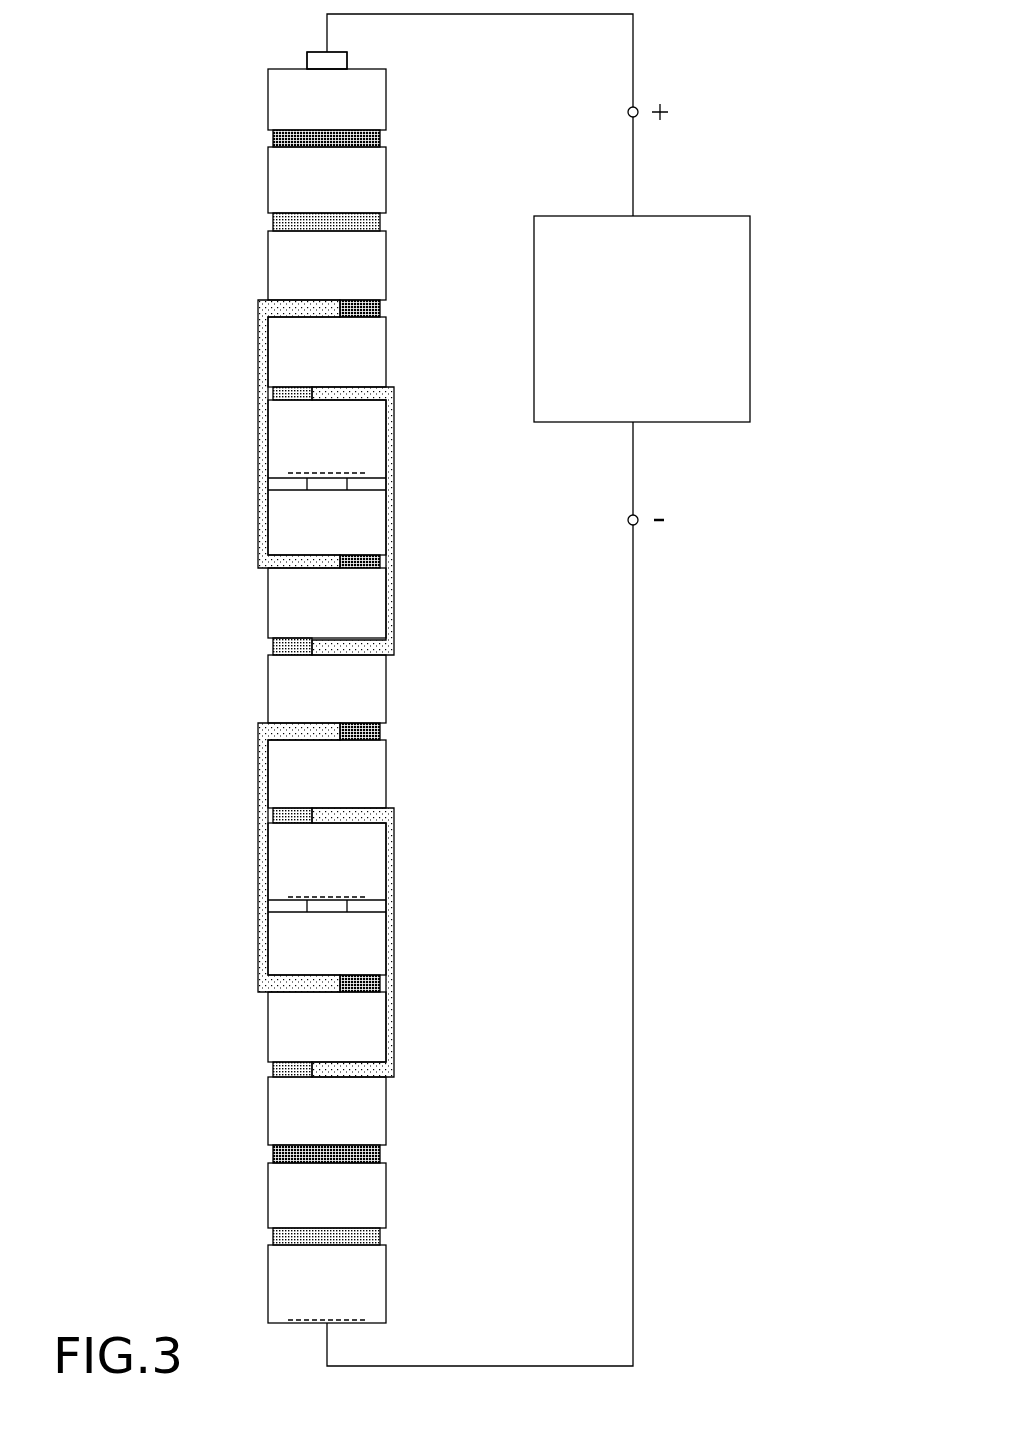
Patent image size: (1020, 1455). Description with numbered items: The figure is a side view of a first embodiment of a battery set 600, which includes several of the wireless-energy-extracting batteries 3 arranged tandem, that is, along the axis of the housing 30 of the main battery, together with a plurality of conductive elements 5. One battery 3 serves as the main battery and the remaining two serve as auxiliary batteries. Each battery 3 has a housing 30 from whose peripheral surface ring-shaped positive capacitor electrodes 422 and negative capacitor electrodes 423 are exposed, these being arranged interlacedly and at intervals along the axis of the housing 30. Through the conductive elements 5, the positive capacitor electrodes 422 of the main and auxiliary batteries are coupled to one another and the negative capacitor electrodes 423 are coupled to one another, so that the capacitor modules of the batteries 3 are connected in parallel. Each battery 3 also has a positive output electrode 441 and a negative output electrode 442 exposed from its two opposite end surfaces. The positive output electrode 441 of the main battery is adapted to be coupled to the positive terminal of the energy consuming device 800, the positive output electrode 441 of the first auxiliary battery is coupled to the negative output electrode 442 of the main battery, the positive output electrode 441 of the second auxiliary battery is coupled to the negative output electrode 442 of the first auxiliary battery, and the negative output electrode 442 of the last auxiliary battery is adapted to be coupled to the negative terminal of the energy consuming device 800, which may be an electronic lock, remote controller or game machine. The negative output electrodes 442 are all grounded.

The battery set 600 is at (170, 66).
The energy consuming device 800 is at (704, 301).
The housing 30 is at (390, 78).
The battery 3 is at (262, 101).
The positive capacitor electrode 422 is at (386, 138).
The negative capacitor electrode 423 is at (290, 393).
The conductive element 5 is at (262, 368).
The positive output electrode 441 is at (318, 50).
The negative output electrode 442 is at (320, 473).